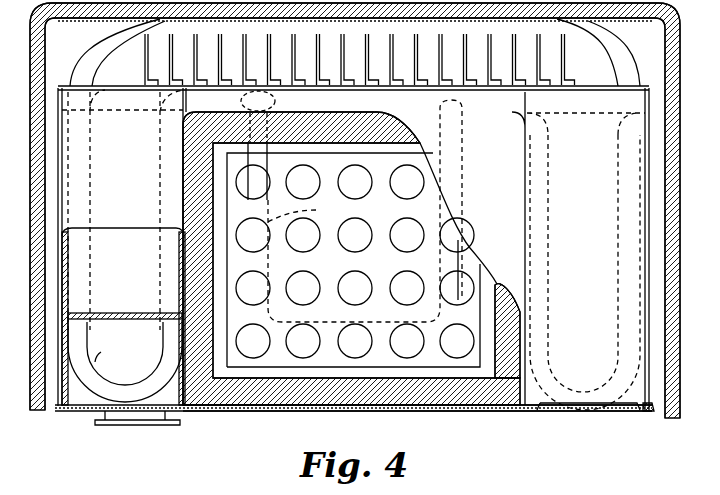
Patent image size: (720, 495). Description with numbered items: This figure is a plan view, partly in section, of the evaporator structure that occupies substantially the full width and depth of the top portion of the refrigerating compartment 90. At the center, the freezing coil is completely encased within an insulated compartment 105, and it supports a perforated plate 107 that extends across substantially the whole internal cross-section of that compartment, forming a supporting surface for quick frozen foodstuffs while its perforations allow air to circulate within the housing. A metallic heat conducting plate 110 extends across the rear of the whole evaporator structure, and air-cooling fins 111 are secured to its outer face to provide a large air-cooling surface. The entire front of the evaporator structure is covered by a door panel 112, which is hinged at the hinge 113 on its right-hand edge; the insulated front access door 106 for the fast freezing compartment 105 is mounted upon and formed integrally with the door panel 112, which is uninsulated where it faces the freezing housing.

The refrigerating compartment 90 is at (355, 210).
The metallic heat conducting plate 110 is at (143, 86).
The air-cooling fins 111 is at (372, 74).
The insulated compartment 105 is at (182, 178).
The insulated front access door 106 is at (287, 397).
The perforated plate 107 is at (353, 233).
The door panel 112 is at (320, 412).
The hinge 113 is at (650, 412).